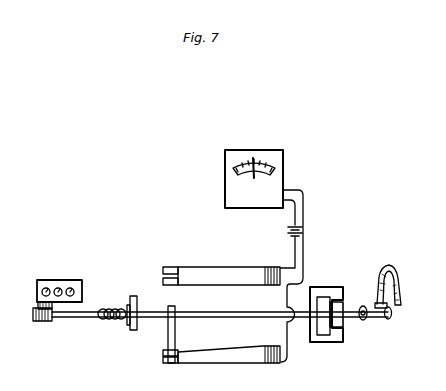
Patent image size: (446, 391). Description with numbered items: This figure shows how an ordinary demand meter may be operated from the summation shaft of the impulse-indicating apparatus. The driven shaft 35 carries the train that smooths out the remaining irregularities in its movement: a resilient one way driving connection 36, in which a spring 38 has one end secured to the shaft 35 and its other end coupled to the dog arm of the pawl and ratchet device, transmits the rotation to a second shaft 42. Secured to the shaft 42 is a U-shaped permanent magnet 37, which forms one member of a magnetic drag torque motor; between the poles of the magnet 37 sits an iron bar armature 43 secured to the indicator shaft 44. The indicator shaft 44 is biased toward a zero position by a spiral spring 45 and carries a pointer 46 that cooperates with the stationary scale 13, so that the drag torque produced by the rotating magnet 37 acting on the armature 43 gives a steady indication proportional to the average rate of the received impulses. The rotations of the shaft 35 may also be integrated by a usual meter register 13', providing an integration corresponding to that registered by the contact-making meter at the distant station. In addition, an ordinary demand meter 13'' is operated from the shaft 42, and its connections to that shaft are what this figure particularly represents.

The stationary scale 13 is at (400, 284).
The meter register 13' is at (59, 285).
The demand meter 13'' is at (230, 179).
The shaft 35 is at (82, 319).
The resilient one way driving connection 36 is at (135, 296).
The U-shaped permanent magnet 37 is at (327, 287).
The spring 38 is at (112, 320).
The shaft 42 is at (215, 318).
The iron bar armature 43 is at (341, 324).
The indicator shaft 44 is at (391, 316).
The spiral spring 45 is at (365, 318).
The pointer 46 is at (377, 304).